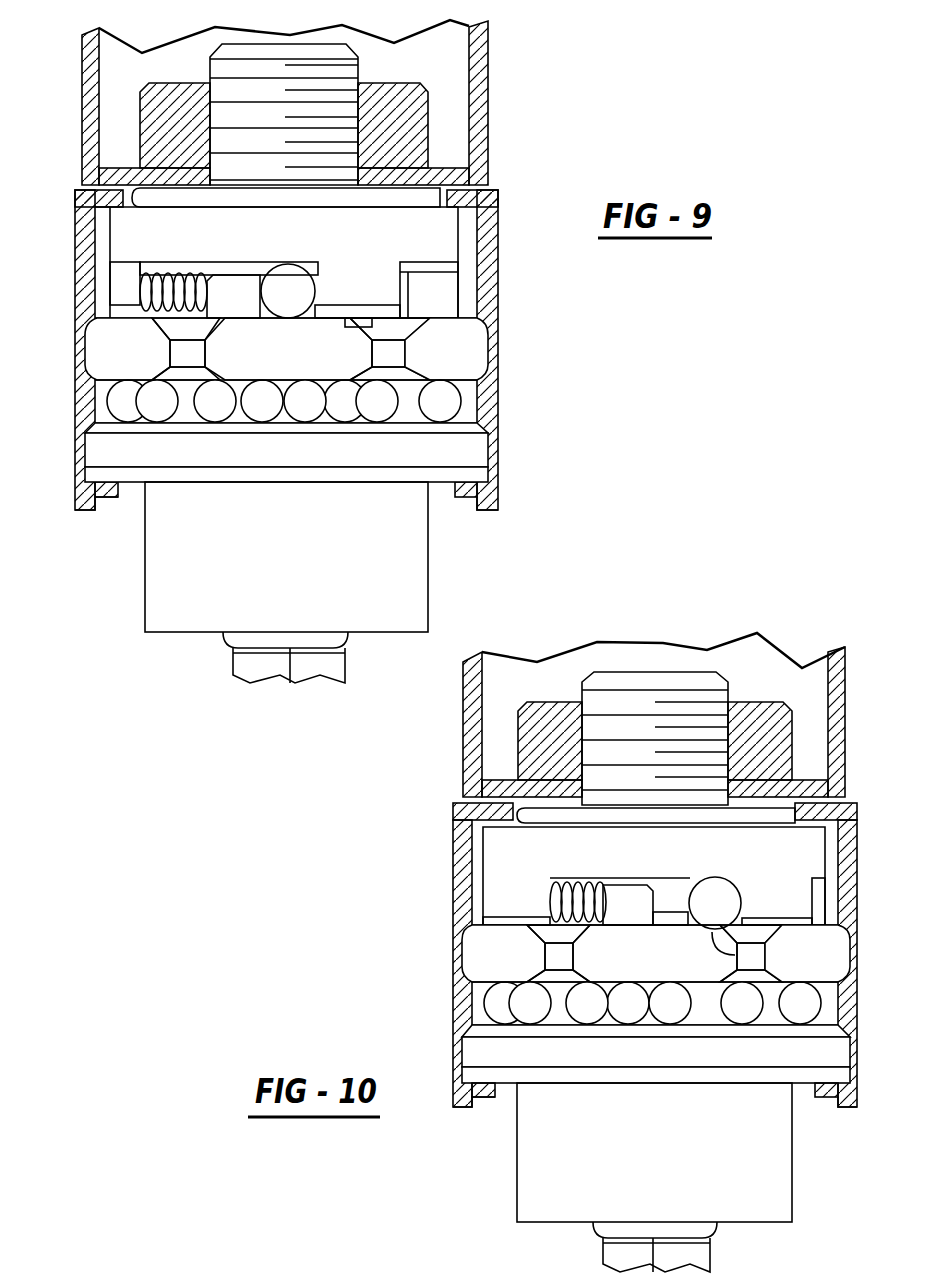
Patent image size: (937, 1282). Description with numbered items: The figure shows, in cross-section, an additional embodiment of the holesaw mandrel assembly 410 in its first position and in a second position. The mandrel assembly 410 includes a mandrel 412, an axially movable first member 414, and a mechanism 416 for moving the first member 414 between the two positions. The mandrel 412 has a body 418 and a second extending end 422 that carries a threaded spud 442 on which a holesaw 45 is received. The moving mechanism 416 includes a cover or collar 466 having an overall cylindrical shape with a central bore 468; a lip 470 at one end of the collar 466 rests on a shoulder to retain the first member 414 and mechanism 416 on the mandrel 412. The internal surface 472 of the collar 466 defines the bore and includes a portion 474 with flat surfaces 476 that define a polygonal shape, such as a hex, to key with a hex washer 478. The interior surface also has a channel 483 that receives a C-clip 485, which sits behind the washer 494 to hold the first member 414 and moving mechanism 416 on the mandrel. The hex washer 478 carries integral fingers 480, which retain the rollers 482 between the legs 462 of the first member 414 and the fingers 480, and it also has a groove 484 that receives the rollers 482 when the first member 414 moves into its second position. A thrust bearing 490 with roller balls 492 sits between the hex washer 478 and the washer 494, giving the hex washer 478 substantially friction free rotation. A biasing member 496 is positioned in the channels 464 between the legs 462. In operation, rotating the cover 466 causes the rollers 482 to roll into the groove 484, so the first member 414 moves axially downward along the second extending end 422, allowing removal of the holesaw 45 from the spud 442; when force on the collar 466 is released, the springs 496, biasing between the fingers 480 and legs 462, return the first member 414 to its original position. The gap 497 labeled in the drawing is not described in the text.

In FIG. 9, the holesaw 45 is at (488, 50).
In FIG. 9, the mandrel assembly 410 is at (517, 76).
In FIG. 9, the mandrel 412 is at (123, 562).
In FIG. 9, the axially movable member 414 is at (148, 233).
In FIG. 9, the mechanism for moving the first member 416 is at (58, 352).
In FIG. 9, the body 418 is at (445, 549).
In FIG. 10, the second extending end 422 is at (771, 817).
In FIG. 9, the threaded spud 442 is at (270, 103).
In FIG. 10, the threaded spud 442 is at (690, 712).
In FIG. 10, the legs 462 is at (786, 901).
In FIG. 10, the channels 464 is at (682, 878).
In FIG. 9, the cover or collar 466 is at (492, 274).
In FIG. 9, the central bore 468 is at (471, 257).
In FIG. 9, the lip 470 is at (468, 186).
In FIG. 9, the internal surface 472 is at (492, 276).
In FIG. 9, the portion of internal surface 474 is at (85, 333).
In FIG. 9, the flat surfaces 476 is at (93, 352).
In FIG. 9, the hex washer 478 is at (465, 348).
In FIG. 9, the fingers 480 is at (228, 298).
In FIG. 10, the fingers 480 is at (628, 900).
In FIG. 9, the rollers 482 is at (290, 292).
In FIG. 10, the rollers 482 is at (714, 906).
In FIG. 10, the channel 483 is at (466, 1108).
In FIG. 9, the groove 484 is at (333, 325).
In FIG. 10, the groove 484 is at (745, 945).
In FIG. 10, the C-clip 485 is at (484, 1095).
In FIG. 10, the thrust bearing 490 is at (474, 1002).
In FIG. 9, the roller balls 492 is at (430, 400).
In FIG. 10, the roller balls 492 is at (747, 1004).
In FIG. 9, the washer 494 is at (442, 448).
In FIG. 10, the washer 494 is at (840, 1047).
In FIG. 9, the biasing member 496 is at (163, 277).
In FIG. 10, the biasing member 496 is at (550, 882).
In FIG. 9, the gap 497 is at (120, 203).